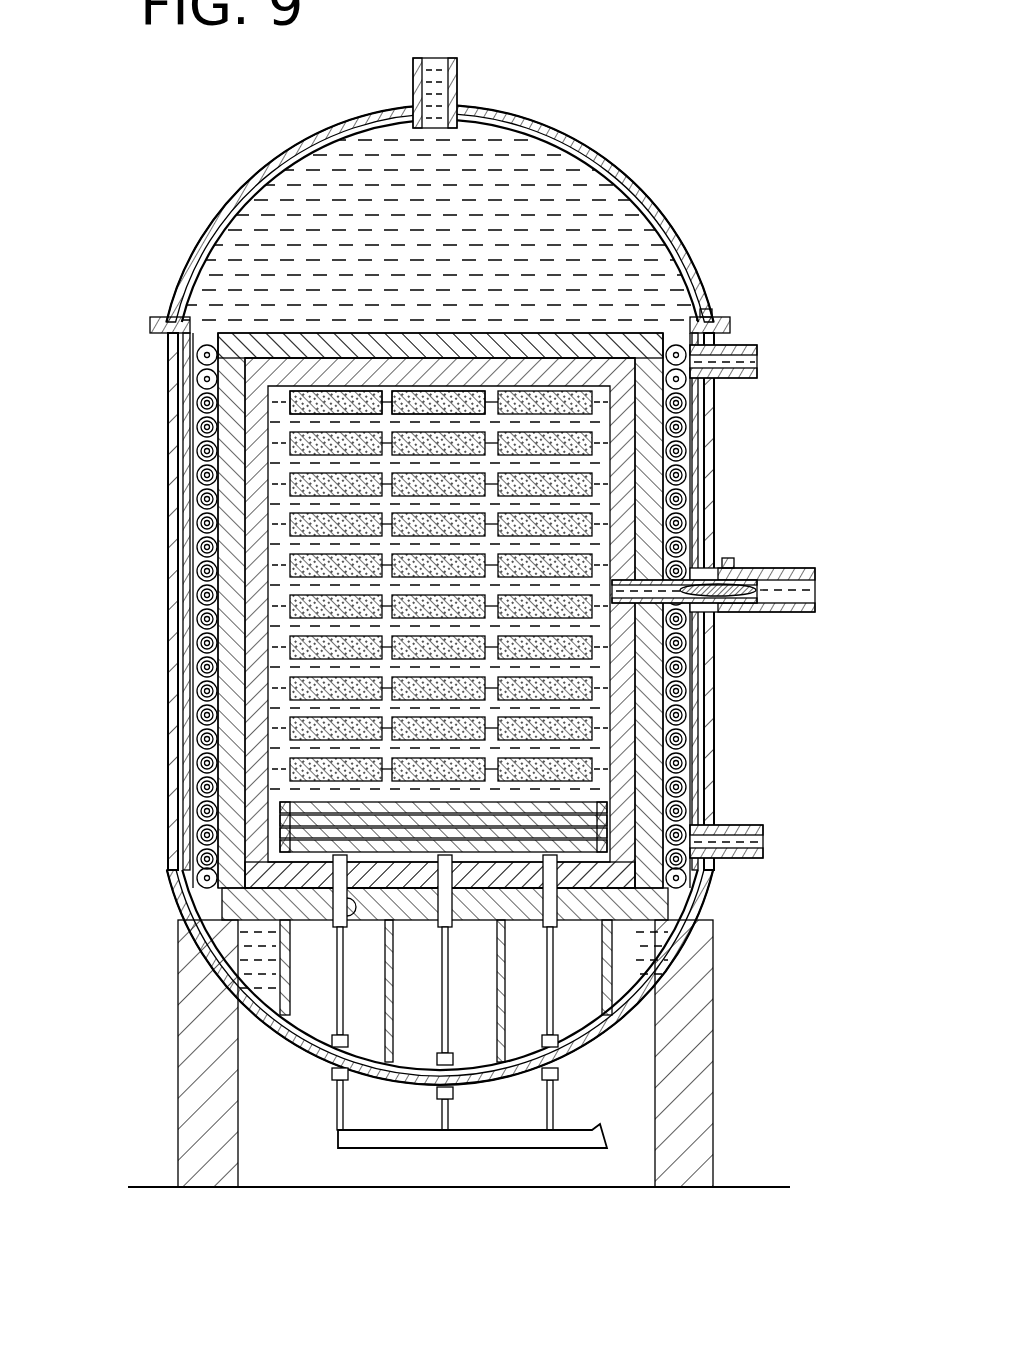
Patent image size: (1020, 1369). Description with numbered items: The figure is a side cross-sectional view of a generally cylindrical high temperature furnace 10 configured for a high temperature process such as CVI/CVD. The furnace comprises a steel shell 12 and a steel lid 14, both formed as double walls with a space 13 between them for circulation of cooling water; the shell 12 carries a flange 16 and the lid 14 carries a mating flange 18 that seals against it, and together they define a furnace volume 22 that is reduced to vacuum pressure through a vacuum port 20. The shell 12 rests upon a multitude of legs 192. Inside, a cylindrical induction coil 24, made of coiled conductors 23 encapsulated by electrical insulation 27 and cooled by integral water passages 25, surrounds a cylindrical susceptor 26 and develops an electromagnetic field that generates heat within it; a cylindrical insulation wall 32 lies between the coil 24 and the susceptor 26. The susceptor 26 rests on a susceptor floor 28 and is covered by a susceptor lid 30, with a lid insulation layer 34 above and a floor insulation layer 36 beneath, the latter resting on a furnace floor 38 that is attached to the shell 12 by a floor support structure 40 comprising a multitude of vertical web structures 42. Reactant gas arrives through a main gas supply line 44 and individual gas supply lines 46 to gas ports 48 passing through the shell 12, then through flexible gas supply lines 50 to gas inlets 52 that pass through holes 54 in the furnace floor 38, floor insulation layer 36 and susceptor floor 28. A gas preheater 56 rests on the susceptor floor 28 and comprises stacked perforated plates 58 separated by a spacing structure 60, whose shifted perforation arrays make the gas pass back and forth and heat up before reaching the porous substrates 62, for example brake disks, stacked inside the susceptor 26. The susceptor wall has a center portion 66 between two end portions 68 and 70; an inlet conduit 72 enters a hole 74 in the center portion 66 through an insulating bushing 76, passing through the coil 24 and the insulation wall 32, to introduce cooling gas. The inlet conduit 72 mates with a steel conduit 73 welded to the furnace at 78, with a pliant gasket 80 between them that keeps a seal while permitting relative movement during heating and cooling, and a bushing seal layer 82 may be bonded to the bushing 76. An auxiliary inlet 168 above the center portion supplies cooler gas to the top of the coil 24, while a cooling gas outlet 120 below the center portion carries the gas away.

The furnace 10 is at (665, 128).
The steel shell 12 is at (170, 393).
The space 13 is at (198, 267).
The steel lid 14 is at (658, 212).
The flange 16 is at (724, 336).
The mating flange 18 is at (706, 318).
The vacuum port 20 is at (456, 80).
The furnace volume 22 is at (458, 226).
The coiled conductors 23 is at (684, 740).
The induction coil 24 is at (690, 490).
The water passages 25 is at (686, 758).
The susceptor 26 is at (620, 450).
The electrical insulation 27 is at (690, 728).
The susceptor floor 28 is at (622, 875).
The susceptor lid 30 is at (440, 385).
The insulation wall 32 is at (652, 820).
The lid insulation layer 34 is at (502, 350).
The floor insulation layer 36 is at (240, 902).
The furnace floor 38 is at (634, 923).
The floor support structure 40 is at (278, 963).
The vertical web structures 42 is at (327, 992).
The main gas supply line 44 is at (588, 1130).
The individual gas supply lines 46 is at (340, 1100).
The gas ports 48 is at (338, 1073).
The flexible gas supply lines 50 is at (343, 1013).
The gas inlets 52 is at (336, 876).
The holes 54 is at (345, 905).
The gas preheater 56 is at (272, 805).
The perforated plates 58 is at (282, 838).
The spacing structure 60 is at (278, 823).
The porous substrates 62 is at (405, 400).
The center portion 66 is at (146, 603).
The end portion 68 is at (128, 162).
The end portion 70 is at (156, 1052).
The inlet conduit 72 is at (736, 606).
The steel conduit 73 is at (812, 610).
The hole 74 is at (796, 576).
The insulating bushing 76 is at (742, 606).
The weld 78 is at (728, 560).
The pliant gasket 80 is at (740, 584).
The bushing seal layer 82 is at (602, 568).
The cooling gas outlet 120 is at (764, 832).
The auxiliary inlet 168 is at (758, 352).
The legs 192 is at (712, 1128).